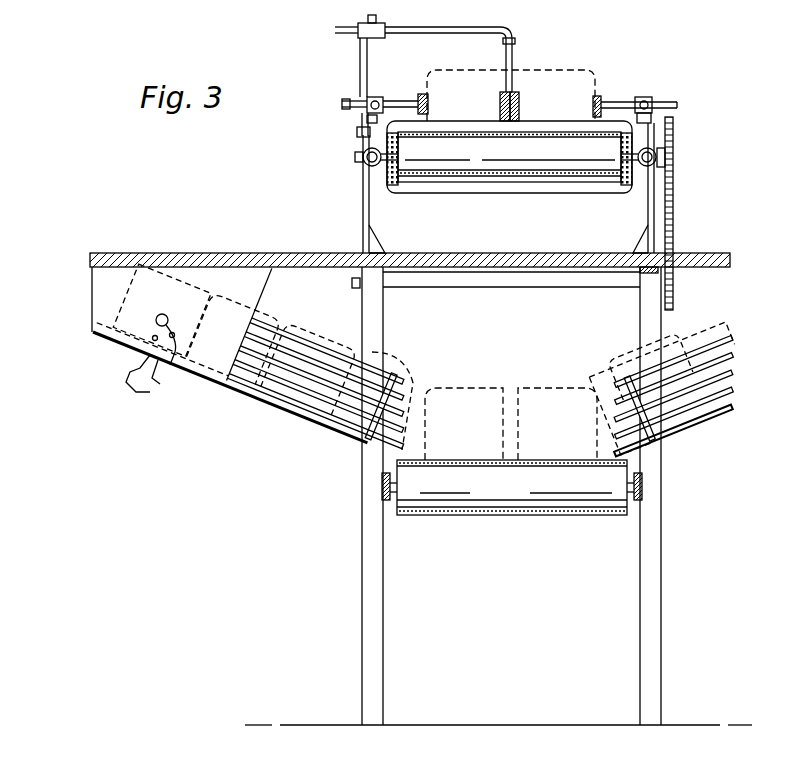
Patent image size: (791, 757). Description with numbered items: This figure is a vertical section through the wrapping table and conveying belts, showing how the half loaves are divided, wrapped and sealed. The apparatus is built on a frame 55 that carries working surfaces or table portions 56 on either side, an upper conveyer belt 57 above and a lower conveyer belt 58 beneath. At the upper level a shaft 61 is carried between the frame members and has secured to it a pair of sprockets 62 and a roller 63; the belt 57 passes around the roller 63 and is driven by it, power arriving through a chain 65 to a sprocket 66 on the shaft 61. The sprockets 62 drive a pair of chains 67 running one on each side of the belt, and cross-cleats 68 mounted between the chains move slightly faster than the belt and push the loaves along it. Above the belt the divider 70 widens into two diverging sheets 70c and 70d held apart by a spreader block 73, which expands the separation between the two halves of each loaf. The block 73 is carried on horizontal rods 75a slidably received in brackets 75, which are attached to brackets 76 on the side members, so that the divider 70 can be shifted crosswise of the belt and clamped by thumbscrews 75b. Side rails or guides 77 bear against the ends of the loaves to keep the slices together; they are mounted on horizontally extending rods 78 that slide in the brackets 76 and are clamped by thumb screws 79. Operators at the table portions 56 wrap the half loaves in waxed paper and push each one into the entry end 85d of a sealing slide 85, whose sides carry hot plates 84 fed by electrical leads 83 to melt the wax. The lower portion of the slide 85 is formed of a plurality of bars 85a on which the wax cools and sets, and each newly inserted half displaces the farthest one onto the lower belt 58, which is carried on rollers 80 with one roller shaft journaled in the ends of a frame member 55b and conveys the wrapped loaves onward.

The frame 55 is at (384, 613).
The frame member 55b is at (382, 488).
The working surface or table portion 56 is at (203, 252).
The upper conveyer belt 57 is at (452, 179).
The lower conveyer belt 58 is at (522, 516).
The shaft 61 is at (368, 177).
The sprockets 62 is at (386, 169).
The roller 63 is at (554, 162).
The chain 65 is at (674, 232).
The sprocket 66 is at (666, 160).
The chains 67 is at (394, 187).
The cross-cleats 68 is at (572, 120).
The divider 70 is at (520, 98).
The sheet 70c is at (499, 108).
The sheet 70d is at (520, 108).
The spreader block 73 is at (514, 90).
The brackets 75 is at (360, 70).
The horizontal rods 75a is at (403, 36).
The thumbscrews 75b is at (370, 16).
The brackets 76 is at (358, 130).
The side rails or guides 77 is at (422, 94).
The horizontally extending rods 78 is at (343, 103).
The thumb screws 79 is at (372, 105).
The rollers 80 is at (468, 494).
The leads 83 is at (148, 380).
The hot plates 84 is at (135, 326).
The sealing slide 85 is at (195, 369).
The bars or cooling slats 85a is at (312, 366).
The entry end 85d is at (90, 290).